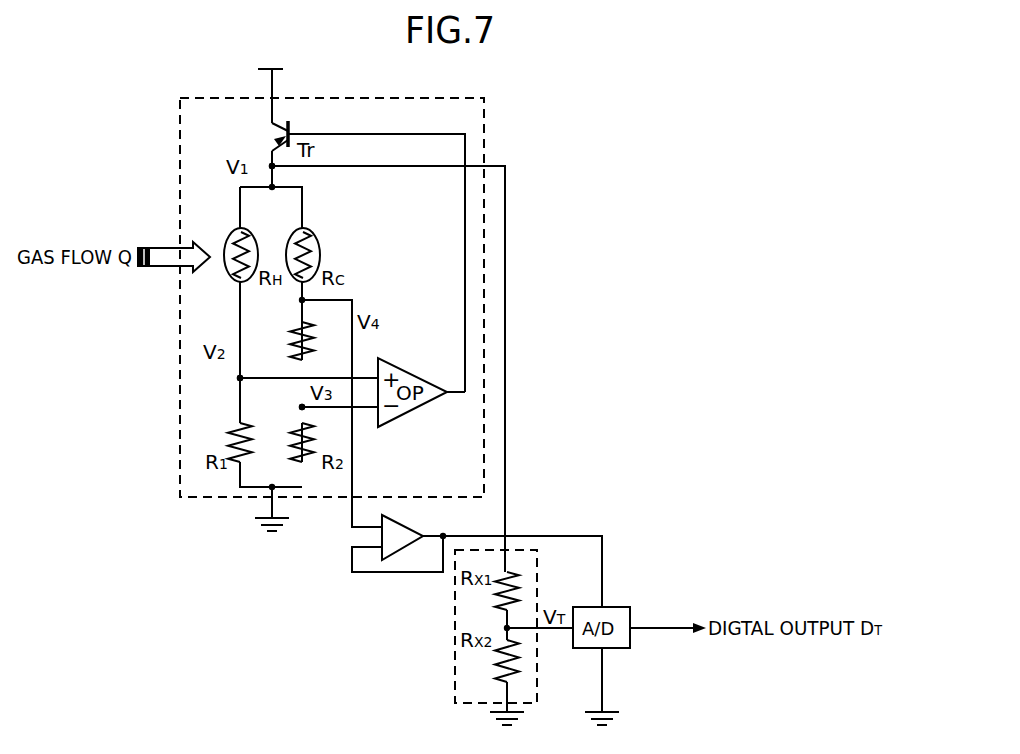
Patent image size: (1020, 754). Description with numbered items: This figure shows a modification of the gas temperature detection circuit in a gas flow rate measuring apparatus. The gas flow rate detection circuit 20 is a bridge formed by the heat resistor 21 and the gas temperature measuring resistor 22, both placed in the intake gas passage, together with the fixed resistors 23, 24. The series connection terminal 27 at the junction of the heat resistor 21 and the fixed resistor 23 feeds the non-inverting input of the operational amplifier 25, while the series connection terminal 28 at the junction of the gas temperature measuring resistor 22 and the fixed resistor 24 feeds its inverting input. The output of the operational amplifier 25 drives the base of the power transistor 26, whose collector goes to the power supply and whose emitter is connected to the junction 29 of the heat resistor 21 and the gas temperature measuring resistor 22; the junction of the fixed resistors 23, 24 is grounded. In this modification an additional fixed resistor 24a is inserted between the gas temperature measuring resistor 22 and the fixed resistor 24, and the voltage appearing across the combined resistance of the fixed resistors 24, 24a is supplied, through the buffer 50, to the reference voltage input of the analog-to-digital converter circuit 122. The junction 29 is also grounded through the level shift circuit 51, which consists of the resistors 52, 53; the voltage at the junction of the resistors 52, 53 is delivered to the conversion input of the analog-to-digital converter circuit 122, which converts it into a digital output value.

The gas flow rate detection circuit 20 is at (180, 116).
The heat resistor 21 is at (228, 236).
The gas temperature measuring resistor 22 is at (290, 233).
The fixed resistor 23 is at (228, 436).
The fixed resistor 24 is at (318, 442).
The fixed resistor 24a is at (292, 333).
The operational amplifier 25 is at (407, 368).
The power transistor 26 is at (290, 128).
The series connection terminal 27 is at (240, 378).
The series connection terminal 28 is at (304, 408).
The junction 29 is at (272, 165).
The buffer 50 is at (383, 558).
The level shift circuit 51 is at (537, 568).
The resistor 52 is at (490, 596).
The resistor 53 is at (490, 662).
The A/D converter circuit 122 is at (616, 648).